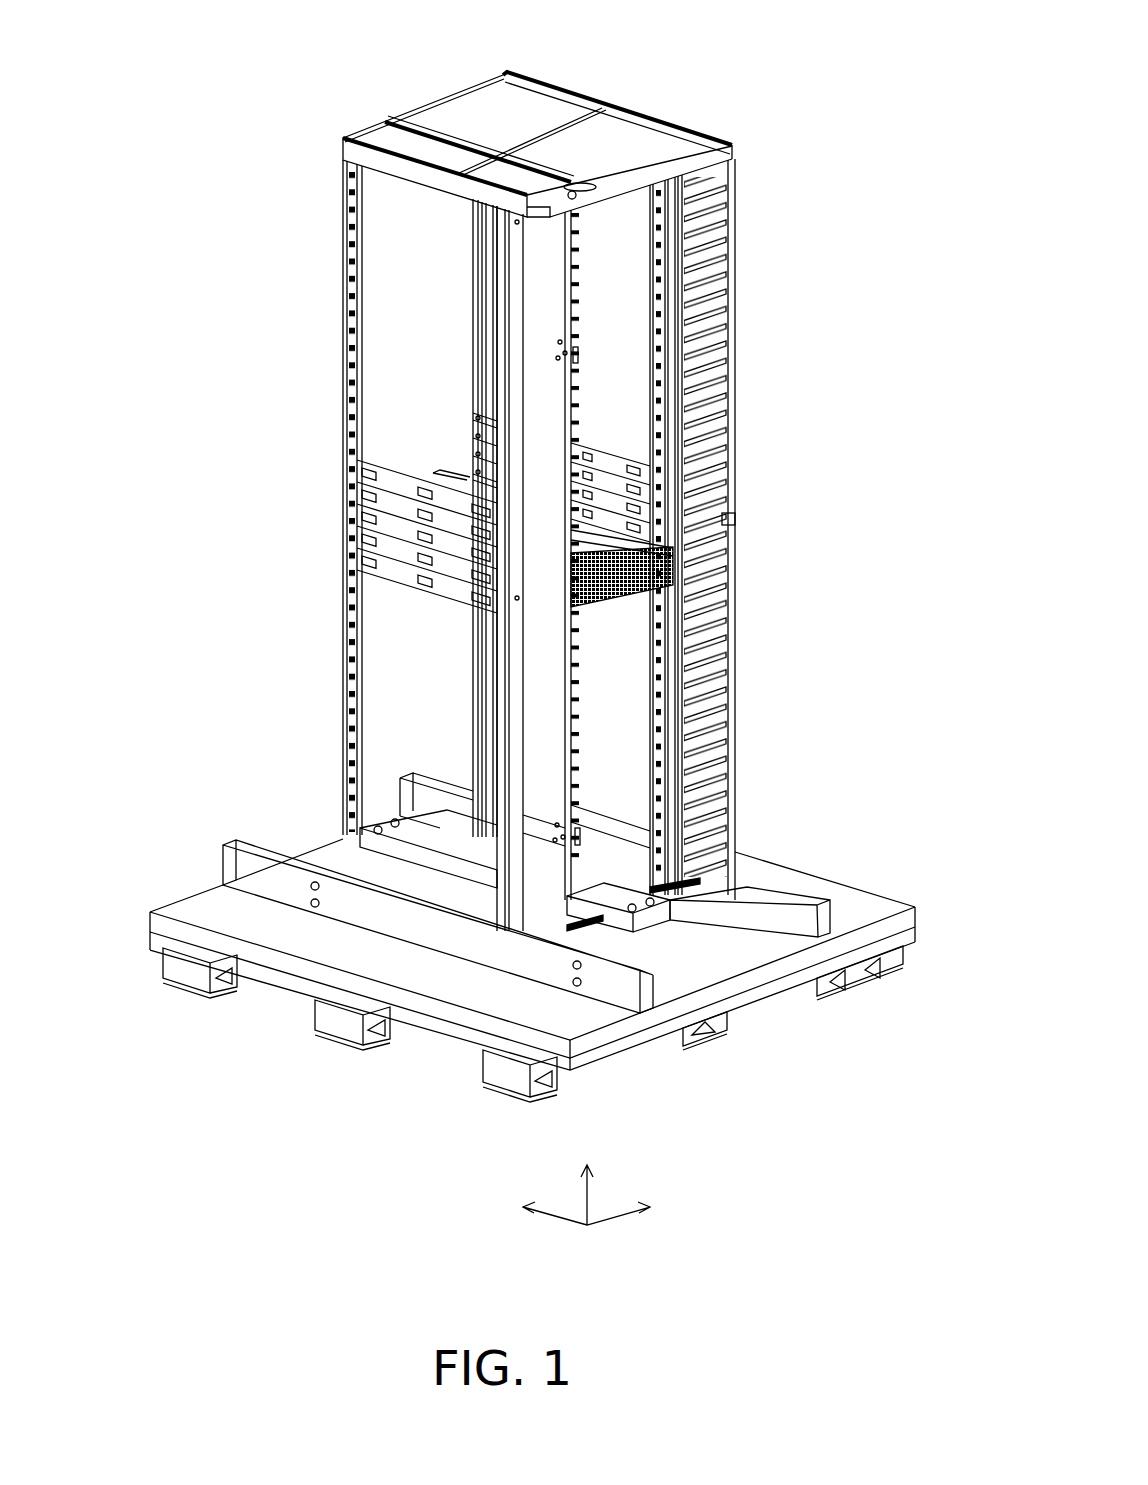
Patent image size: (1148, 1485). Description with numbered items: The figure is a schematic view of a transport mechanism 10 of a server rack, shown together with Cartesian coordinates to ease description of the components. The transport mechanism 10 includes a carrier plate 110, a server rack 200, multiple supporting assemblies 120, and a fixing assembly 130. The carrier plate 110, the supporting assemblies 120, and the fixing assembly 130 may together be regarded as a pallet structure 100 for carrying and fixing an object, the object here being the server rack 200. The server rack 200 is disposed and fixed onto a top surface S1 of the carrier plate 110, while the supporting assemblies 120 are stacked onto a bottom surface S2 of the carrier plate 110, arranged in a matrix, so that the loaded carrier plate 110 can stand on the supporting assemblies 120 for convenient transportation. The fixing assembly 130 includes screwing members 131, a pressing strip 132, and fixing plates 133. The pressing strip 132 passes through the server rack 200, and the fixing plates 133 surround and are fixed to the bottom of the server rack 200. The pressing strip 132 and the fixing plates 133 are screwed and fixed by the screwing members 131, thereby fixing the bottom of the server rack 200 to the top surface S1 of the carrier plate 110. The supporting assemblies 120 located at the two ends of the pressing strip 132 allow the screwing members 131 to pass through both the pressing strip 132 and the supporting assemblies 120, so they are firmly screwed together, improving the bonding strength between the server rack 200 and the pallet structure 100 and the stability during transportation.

The transport mechanism 10 is at (129, 48).
The pallet structure 100 is at (188, 22).
The carrier plate 110 is at (165, 908).
The supporting assemblies 120 is at (343, 1040).
The fixing assembly 130 is at (144, 197).
The screwing members 131 is at (393, 818).
The pressing strip 132 is at (440, 843).
The fixing plates 133 is at (623, 990).
The server rack 200 is at (847, 328).
The top surface S1 is at (825, 872).
The bottom surface S2 is at (447, 1050).